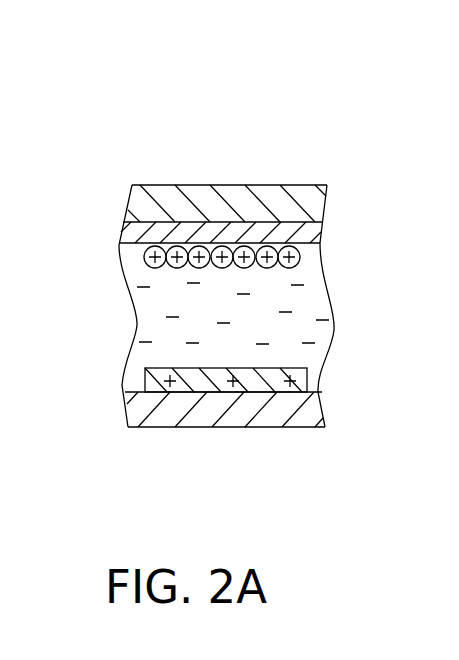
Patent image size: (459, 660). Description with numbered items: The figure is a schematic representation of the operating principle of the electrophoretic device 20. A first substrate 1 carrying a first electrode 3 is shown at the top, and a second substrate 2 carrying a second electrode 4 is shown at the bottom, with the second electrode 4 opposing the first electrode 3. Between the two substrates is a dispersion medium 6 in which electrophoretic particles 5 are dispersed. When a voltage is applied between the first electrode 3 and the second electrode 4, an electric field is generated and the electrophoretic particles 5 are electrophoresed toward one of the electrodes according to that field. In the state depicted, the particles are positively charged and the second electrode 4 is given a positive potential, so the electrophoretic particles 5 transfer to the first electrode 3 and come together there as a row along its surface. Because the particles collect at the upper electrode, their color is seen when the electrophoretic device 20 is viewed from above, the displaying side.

The electrophoretic device 20 is at (187, 250).
The first substrate 1 is at (302, 202).
The second substrate 2 is at (268, 417).
The first electrode 3 is at (184, 234).
The second electrode 4 is at (197, 377).
The electrophoretic particles 5 is at (142, 257).
The dispersion medium 6 is at (140, 350).